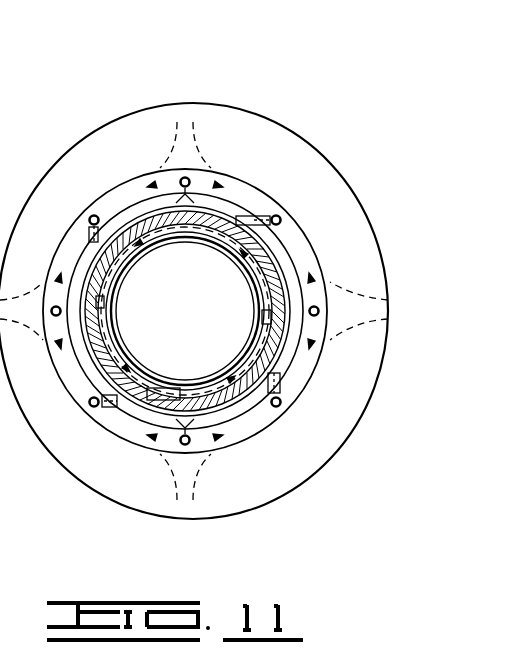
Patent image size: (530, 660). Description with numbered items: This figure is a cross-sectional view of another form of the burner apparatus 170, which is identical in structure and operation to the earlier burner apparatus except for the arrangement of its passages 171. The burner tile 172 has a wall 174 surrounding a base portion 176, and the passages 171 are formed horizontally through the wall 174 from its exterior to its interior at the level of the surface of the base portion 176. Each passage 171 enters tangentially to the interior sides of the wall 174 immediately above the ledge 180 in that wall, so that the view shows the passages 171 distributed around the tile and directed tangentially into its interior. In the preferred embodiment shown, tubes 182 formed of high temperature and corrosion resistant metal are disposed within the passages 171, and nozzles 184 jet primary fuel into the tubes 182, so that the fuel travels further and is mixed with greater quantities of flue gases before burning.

The burner apparatus 170 is at (152, 123).
The passages 171 is at (92, 252).
The burner tile 172 is at (304, 271).
The wall 174 is at (297, 230).
The base portion 176 is at (297, 251).
The ledge 180 is at (246, 398).
The tubes 182 is at (88, 238).
The nozzles 184 is at (95, 226).